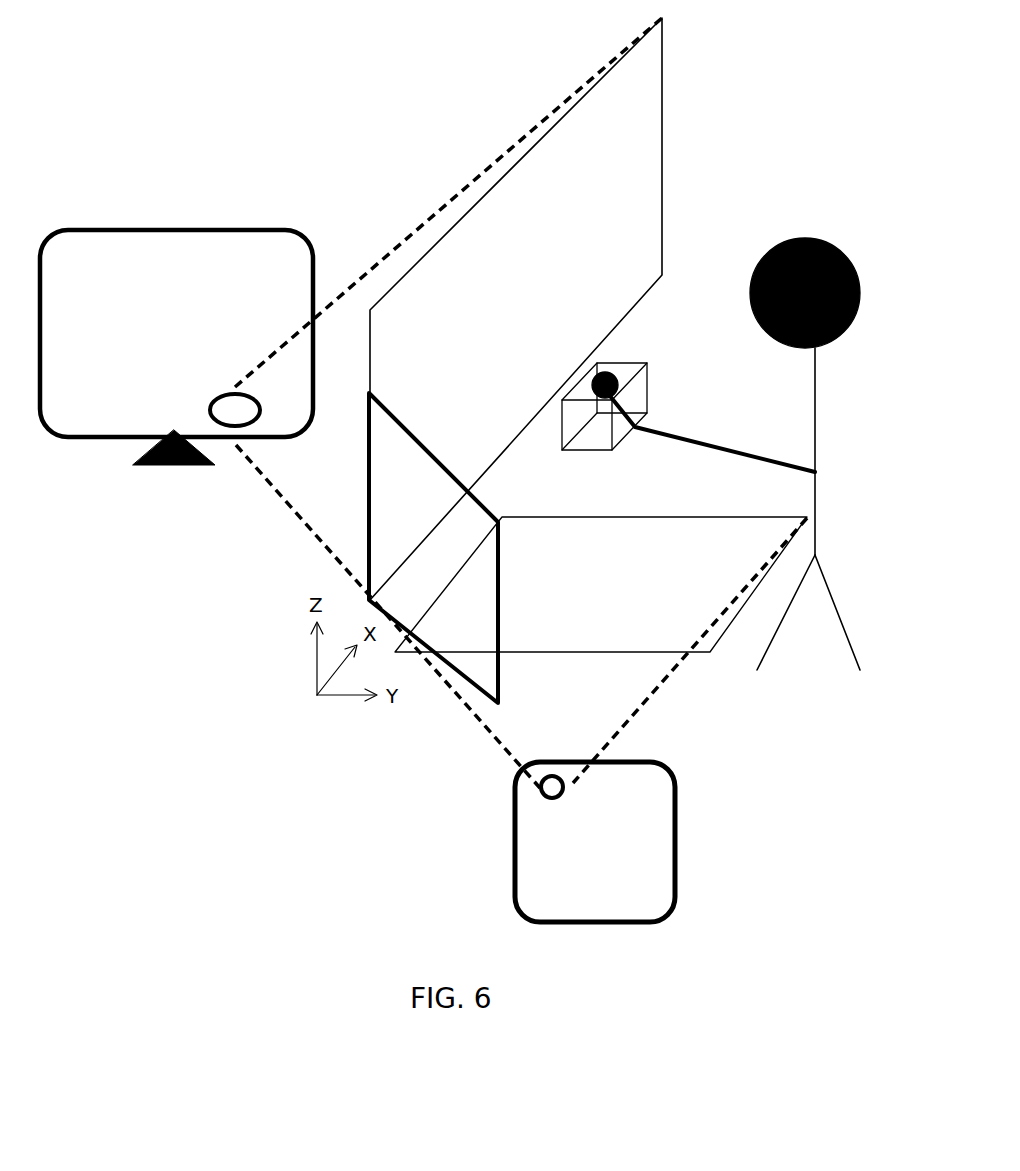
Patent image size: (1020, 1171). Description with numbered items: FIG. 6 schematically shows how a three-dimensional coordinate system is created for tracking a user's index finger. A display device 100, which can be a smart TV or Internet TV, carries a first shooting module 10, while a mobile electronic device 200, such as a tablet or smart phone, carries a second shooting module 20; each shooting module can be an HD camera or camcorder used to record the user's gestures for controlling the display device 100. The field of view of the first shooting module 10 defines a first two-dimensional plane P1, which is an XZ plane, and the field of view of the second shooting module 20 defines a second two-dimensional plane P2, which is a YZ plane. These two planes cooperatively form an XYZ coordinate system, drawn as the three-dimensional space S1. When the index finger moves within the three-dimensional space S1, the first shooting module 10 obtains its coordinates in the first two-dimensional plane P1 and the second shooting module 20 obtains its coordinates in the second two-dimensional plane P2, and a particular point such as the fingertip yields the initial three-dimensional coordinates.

The display device 100 is at (210, 228).
The first shooting module 10 is at (220, 424).
The mobile electronic device 200 is at (665, 765).
The second shooting module 20 is at (553, 800).
The first two-dimensional plane P1 is at (625, 168).
The second two-dimensional plane P2 is at (460, 518).
The three-dimensional space S1 is at (622, 378).